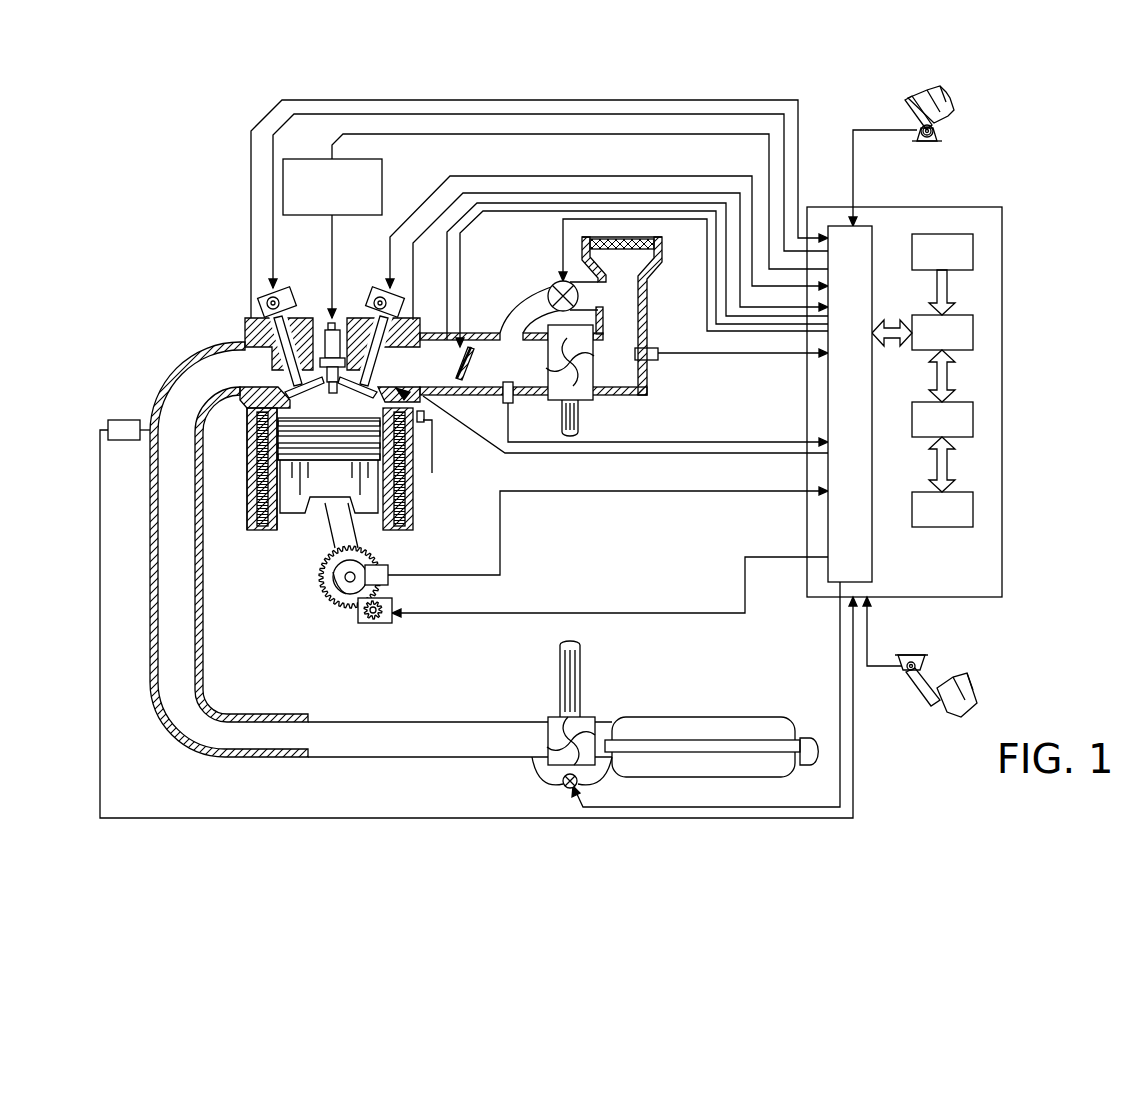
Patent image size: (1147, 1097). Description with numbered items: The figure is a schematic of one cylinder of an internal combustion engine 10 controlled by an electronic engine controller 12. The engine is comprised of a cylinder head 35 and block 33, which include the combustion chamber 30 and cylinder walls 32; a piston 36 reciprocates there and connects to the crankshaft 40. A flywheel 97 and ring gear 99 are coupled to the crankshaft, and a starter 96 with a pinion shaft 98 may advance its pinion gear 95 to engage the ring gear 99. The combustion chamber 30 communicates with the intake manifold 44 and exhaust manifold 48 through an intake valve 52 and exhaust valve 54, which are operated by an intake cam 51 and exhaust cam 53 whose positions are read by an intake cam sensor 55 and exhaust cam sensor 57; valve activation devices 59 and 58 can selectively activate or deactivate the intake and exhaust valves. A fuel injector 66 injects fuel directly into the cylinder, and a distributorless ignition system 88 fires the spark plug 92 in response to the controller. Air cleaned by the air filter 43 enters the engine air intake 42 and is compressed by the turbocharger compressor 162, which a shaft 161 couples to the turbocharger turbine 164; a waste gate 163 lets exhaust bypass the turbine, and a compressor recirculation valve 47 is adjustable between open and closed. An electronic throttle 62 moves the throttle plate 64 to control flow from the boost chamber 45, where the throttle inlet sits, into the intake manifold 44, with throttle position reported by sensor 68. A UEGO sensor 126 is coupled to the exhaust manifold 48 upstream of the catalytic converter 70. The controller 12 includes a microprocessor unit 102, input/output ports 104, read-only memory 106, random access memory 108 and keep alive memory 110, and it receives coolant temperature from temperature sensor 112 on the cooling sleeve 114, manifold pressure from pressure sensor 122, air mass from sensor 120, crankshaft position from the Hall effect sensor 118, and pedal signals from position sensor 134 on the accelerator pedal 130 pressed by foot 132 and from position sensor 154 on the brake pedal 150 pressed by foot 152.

The internal combustion engine 10 is at (183, 271).
The electronic engine controller 12 is at (993, 207).
The combustion chamber 30 is at (330, 405).
The cylinder walls 32 is at (285, 517).
The block 33 is at (242, 441).
The cylinder head 35 is at (236, 311).
The piston 36 is at (317, 490).
The crankshaft 40 is at (340, 600).
The engine air intake 42 is at (512, 256).
The air filter 43 is at (632, 250).
The intake manifold 44 is at (419, 376).
The boost chamber 45 is at (507, 376).
The compressor recirculation valve 47 is at (558, 278).
The exhaust manifold 48 is at (205, 383).
The intake cam 51 is at (388, 283).
The intake valve 52 is at (371, 373).
The exhaust cam 53 is at (277, 283).
The exhaust valve 54 is at (292, 382).
The intake cam sensor 55 is at (400, 308).
The exhaust cam sensor 57 is at (263, 302).
The valve activation device 58 is at (287, 302).
The valve activation device 59 is at (380, 303).
The electronic throttle 62 is at (471, 356).
The throttle plate 64 is at (470, 373).
The fuel injector 66 is at (424, 426).
The throttle position sensor 68 is at (438, 347).
The catalytic converter 70 is at (648, 717).
The distributorless ignition system 88 is at (292, 159).
The spark plug 92 is at (337, 330).
The pinion gear 95 is at (380, 625).
The starter 96 is at (392, 623).
The flywheel 97 is at (333, 575).
The pinion shaft 98 is at (373, 620).
The ring gear 99 is at (348, 612).
The microprocessor unit 102 is at (973, 333).
The input/output ports 104 is at (872, 232).
The read-only memory 106 is at (973, 252).
The random access memory 108 is at (973, 420).
The keep alive memory 110 is at (973, 510).
The temperature sensor 112 is at (445, 447).
The cooling sleeve 114 is at (405, 494).
The Hall effect sensor 118 is at (388, 565).
The air mass sensor 120 is at (654, 347).
The pressure sensor 122 is at (503, 400).
The UEGO sensor 126 is at (108, 426).
The accelerator pedal 130 is at (910, 110).
The foot 132 is at (955, 95).
The position sensor 134 is at (935, 131).
The brake pedal 150 is at (930, 708).
The foot 152 is at (963, 675).
The position sensor 154 is at (905, 662).
The shaft 161 is at (560, 415).
The turbocharger compressor 162 is at (582, 387).
The waste gate 163 is at (563, 785).
The turbocharger turbine 164 is at (553, 717).